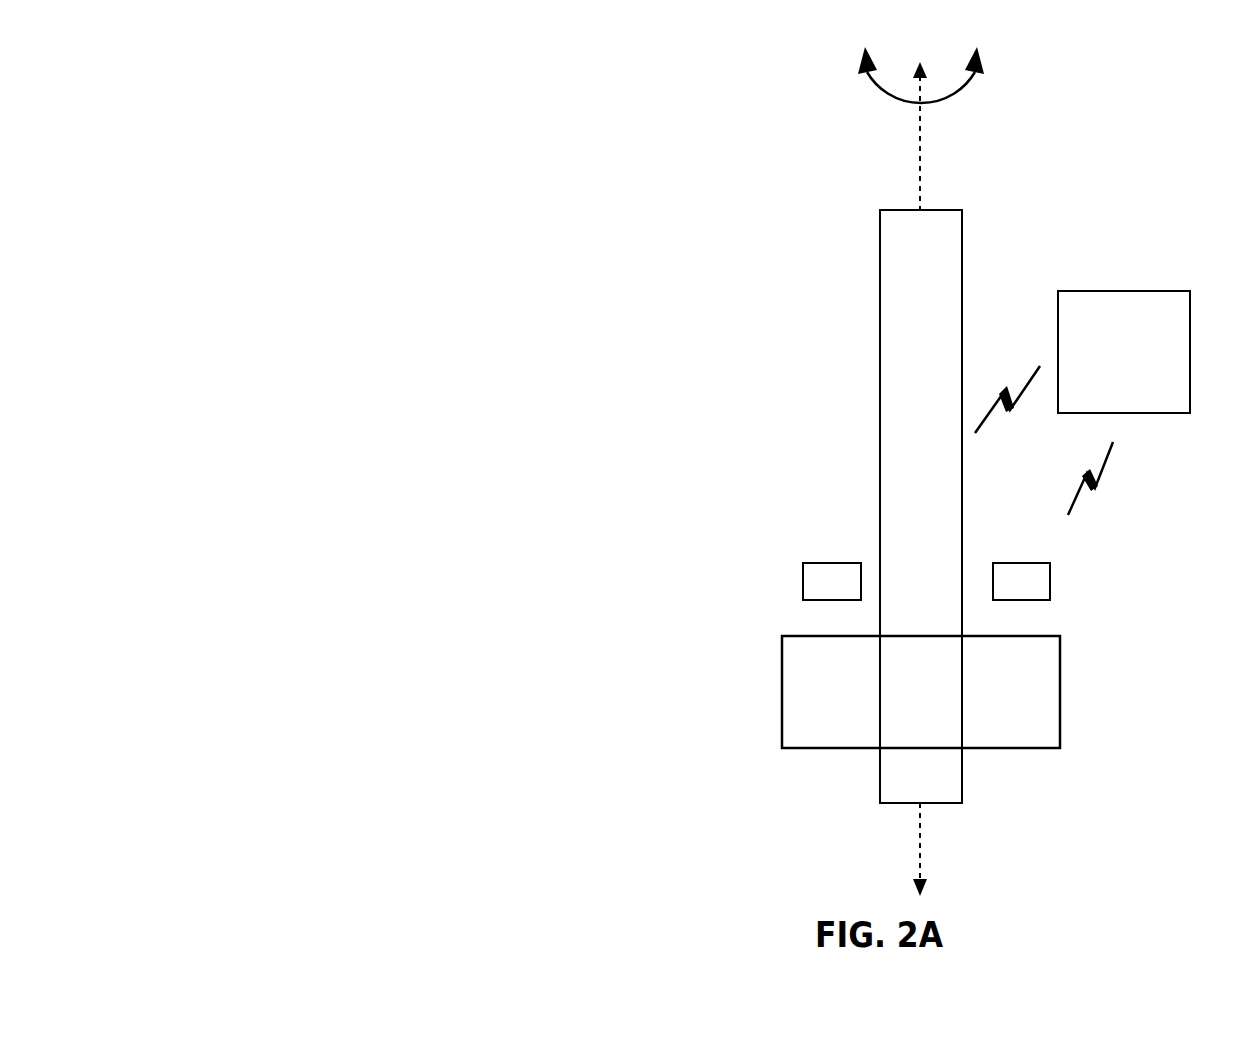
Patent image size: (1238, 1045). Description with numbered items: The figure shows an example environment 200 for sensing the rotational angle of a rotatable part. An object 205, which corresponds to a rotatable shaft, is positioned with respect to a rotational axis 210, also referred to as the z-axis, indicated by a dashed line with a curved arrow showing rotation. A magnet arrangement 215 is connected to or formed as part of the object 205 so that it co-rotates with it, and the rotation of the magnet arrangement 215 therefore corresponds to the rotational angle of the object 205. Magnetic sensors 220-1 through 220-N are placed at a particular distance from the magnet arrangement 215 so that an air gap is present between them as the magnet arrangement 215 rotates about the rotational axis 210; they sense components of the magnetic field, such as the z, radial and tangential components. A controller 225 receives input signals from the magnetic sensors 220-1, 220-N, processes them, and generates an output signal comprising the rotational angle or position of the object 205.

The environment 200 is at (328, 50).
The object 205 is at (880, 213).
The rotational axis 210 is at (924, 131).
The magnet arrangement 215 is at (782, 690).
The magnetic sensor 220-1 is at (803, 580).
The magnetic sensor 220-N is at (1050, 583).
The controller 225 is at (1104, 381).